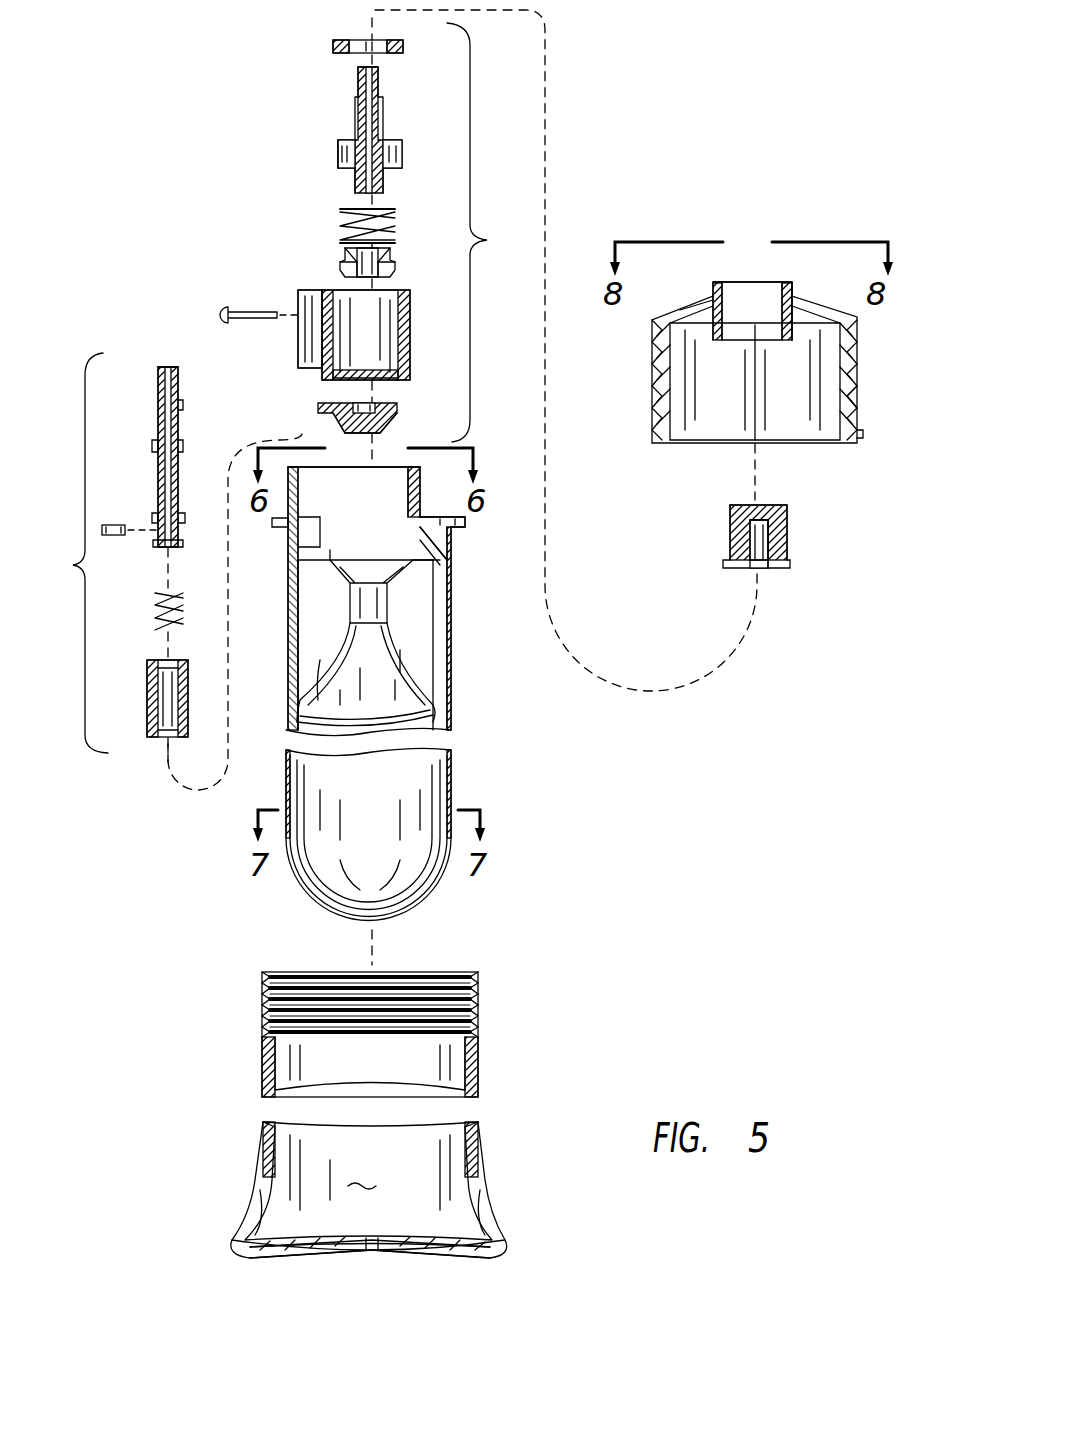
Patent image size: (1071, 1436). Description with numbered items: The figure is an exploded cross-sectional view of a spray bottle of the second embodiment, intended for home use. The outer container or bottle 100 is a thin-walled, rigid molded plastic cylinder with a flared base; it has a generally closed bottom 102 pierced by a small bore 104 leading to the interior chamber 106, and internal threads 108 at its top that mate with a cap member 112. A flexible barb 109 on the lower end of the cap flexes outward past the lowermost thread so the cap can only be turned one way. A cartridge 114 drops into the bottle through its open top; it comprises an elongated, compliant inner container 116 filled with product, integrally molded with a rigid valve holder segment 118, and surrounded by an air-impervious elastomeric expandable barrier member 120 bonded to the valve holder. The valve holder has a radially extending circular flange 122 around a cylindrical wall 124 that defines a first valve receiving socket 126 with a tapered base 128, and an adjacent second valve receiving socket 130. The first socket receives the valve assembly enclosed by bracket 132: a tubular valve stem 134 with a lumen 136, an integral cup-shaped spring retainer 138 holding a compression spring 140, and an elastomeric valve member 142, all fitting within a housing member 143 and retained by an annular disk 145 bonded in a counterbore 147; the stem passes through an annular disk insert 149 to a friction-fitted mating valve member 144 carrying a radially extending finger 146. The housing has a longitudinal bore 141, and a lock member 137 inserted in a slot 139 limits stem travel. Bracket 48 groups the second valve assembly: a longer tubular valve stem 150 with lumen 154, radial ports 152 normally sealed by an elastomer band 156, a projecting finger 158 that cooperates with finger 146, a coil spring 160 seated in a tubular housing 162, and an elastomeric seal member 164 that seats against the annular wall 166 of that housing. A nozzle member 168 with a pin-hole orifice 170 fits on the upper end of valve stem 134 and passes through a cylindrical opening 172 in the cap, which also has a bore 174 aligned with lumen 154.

The valve assembly 48 is at (75, 553).
The outer container 100 is at (412, 1011).
The closed bottom 102 is at (320, 1248).
The bore 104 is at (372, 1252).
The interior chamber 106 is at (369, 1208).
The internal threads 108 is at (445, 975).
The flexible barb 109 is at (862, 435).
The cap member 112 is at (790, 351).
The cartridge 114 is at (388, 665).
The inner container 116 is at (420, 655).
The valve holder segment 118 is at (440, 545).
The expandable barrier member 120 is at (290, 647).
The circular flange 122 is at (466, 522).
The cylindrical wall 124 is at (415, 498).
The first valve receiving socket 126 is at (397, 467).
The tapered base 128 is at (400, 575).
The second valve receiving socket 130 is at (300, 528).
The valve assembly 132 is at (489, 232).
The tubular valve stem 134 is at (335, 130).
The lumen 136 is at (357, 90).
The lock member 137 is at (224, 310).
The cup-shaped spring retainer 138 is at (355, 120).
The slot 139 is at (305, 315).
The compression spring 140 is at (340, 212).
The longitudinal bore 141 is at (300, 343).
The elastomeric valve member 142 is at (347, 258).
The housing member 143 is at (345, 330).
The mating valve member 144 is at (340, 424).
The annular disk 145 is at (331, 48).
The radially extending finger 146 is at (320, 408).
The counterbore 147 is at (333, 297).
The annular disk insert 149 is at (380, 378).
The valve stem 150 is at (163, 429).
The radial ports 152 is at (178, 530).
The lumen 154 is at (160, 370).
The elastomer band 156 is at (112, 522).
The finger 158 is at (182, 400).
The coil spring 160 is at (155, 595).
The tubular housing 162 is at (148, 682).
The elastomeric seal member 164 is at (152, 441).
The annular wall 166 is at (310, 577).
The nozzle member 168 is at (754, 536).
The pin-hole orifice 170 is at (730, 518).
The cylindrical opening 172 is at (735, 300).
The bore 174 is at (695, 305).